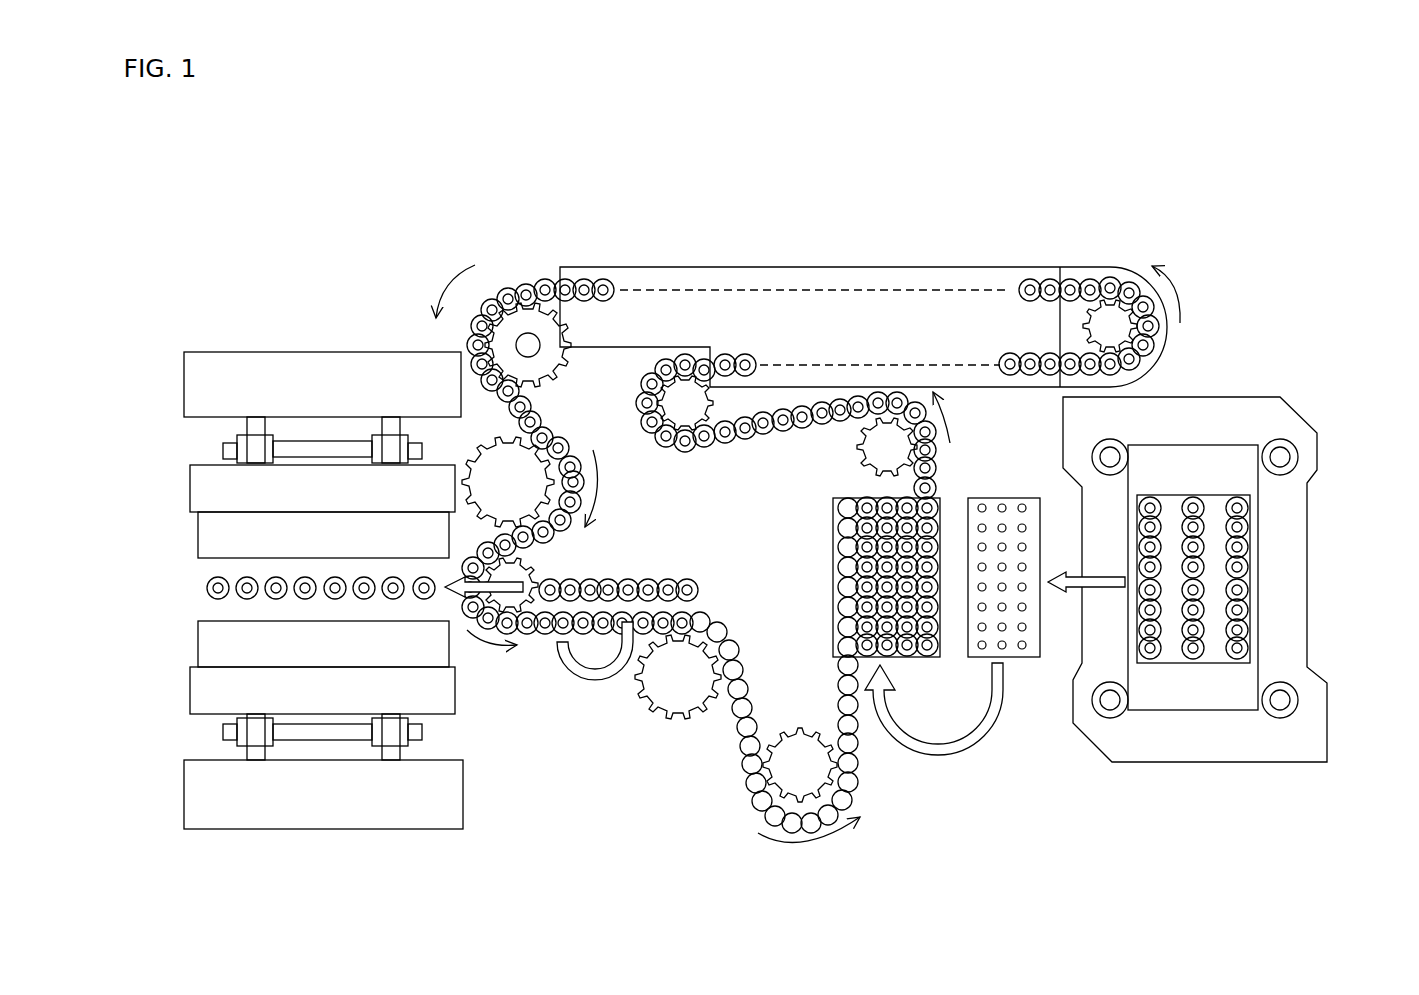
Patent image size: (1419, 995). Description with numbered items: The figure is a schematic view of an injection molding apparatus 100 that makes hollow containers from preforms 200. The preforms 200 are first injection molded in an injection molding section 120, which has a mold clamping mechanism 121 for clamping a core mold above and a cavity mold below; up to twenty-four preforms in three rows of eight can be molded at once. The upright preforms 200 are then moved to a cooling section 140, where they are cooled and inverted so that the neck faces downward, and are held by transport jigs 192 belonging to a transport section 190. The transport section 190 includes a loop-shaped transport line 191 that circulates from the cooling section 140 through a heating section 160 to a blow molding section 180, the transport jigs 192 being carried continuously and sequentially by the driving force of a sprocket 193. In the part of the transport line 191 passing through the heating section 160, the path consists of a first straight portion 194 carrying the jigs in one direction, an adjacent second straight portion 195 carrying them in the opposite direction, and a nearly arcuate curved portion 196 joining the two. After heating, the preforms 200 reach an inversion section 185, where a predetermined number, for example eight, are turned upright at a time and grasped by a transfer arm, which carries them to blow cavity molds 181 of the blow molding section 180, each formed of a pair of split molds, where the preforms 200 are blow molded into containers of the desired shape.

The injection molding apparatus 100 is at (1168, 203).
The injection molding section 120 is at (1218, 540).
The mold clamping mechanism 121 is at (1292, 620).
The cooling section 140 is at (955, 672).
The heating section 160 is at (920, 296).
The blow molding section 180 is at (272, 310).
The blow cavity molds 181 is at (432, 645).
The inversion section 185 is at (585, 686).
The transport section 190 is at (744, 785).
The transport line 191 is at (743, 728).
The transport jigs 192 is at (941, 556).
The sprocket 193 is at (870, 445).
The first straight portion 194 is at (1180, 363).
The second straight portion 195 is at (1180, 285).
The curved portion 196 is at (1190, 325).
The preforms 200 is at (937, 486).